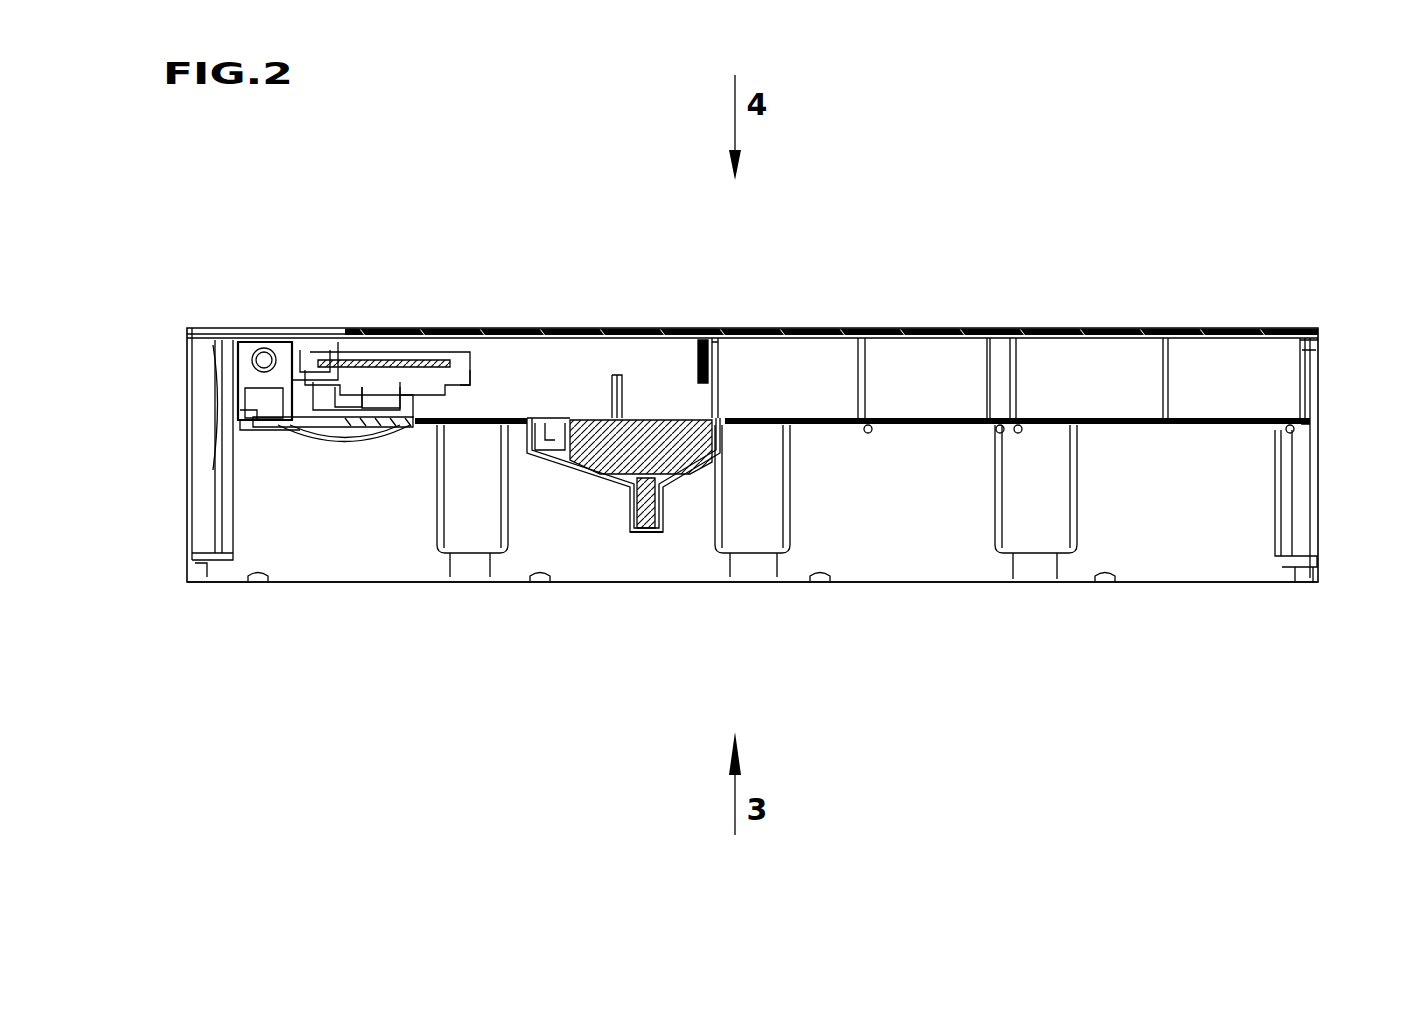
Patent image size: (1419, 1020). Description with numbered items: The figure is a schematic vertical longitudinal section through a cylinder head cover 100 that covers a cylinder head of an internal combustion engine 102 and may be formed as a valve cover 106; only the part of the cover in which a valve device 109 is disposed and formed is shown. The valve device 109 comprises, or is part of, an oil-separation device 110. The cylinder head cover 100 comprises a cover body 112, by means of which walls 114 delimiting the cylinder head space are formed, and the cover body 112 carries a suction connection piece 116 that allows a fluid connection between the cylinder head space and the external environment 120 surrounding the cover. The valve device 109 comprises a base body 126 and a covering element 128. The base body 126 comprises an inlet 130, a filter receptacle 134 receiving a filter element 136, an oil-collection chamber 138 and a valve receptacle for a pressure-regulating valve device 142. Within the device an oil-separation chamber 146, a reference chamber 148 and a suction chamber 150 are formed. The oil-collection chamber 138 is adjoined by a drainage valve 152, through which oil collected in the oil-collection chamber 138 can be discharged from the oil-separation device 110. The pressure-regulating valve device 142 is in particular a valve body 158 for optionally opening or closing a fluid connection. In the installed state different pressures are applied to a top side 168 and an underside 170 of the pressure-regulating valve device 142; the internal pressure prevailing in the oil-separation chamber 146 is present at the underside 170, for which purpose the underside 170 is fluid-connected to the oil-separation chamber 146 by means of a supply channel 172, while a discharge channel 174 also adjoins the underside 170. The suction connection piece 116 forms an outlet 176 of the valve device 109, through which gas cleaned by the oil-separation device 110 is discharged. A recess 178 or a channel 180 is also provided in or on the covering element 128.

The cylinder head cover 100 is at (1162, 163).
The internal combustion engine 102 is at (1078, 152).
The valve cover 106 is at (1235, 180).
The valve device 109 is at (503, 318).
The oil-separation device 110 is at (650, 538).
The cover body 112 is at (1262, 493).
The walls 114 is at (1215, 330).
The suction connection piece 116 is at (283, 346).
The external environment 120 is at (1032, 270).
The base body 126 is at (900, 425).
The covering element 128 is at (347, 434).
The inlet 130 is at (1240, 426).
The filter receptacle 134 is at (676, 387).
The filter element 136 is at (718, 355).
The oil-collection chamber 138 is at (665, 455).
The pressure-regulating valve device 142 is at (340, 345).
The oil-separation chamber 146 is at (641, 388).
The reference chamber 148 is at (420, 350).
The suction chamber 150 is at (255, 352).
The drainage valve 152 is at (640, 537).
The valve body 158 is at (383, 350).
The top side 168 is at (448, 352).
The underside 170 is at (410, 402).
The supply channel 172 is at (433, 410).
The discharge channel 174 is at (378, 404).
The outlet 176 is at (250, 365).
The recess 178 is at (272, 430).
The channel 180 is at (313, 430).